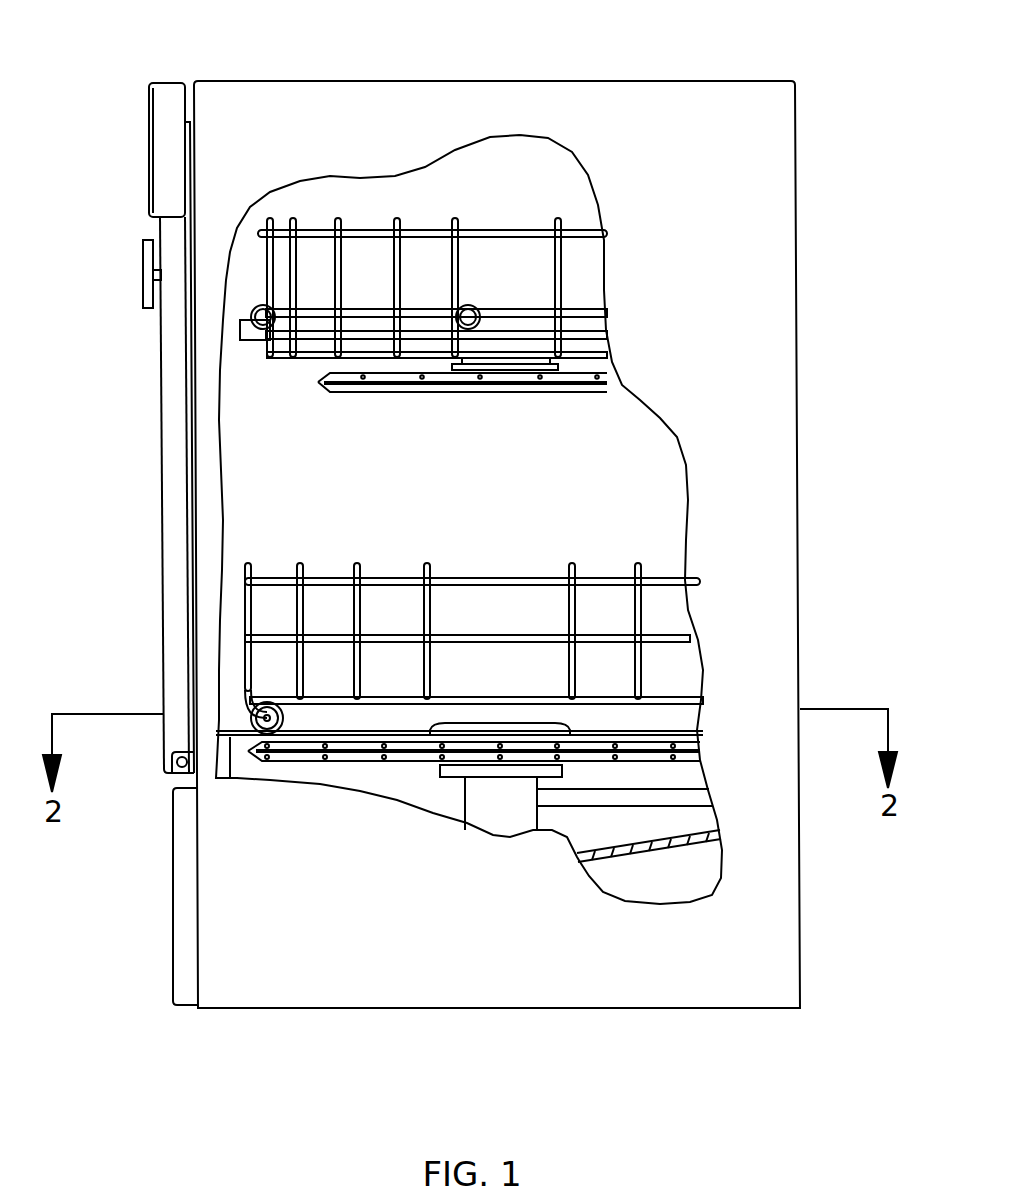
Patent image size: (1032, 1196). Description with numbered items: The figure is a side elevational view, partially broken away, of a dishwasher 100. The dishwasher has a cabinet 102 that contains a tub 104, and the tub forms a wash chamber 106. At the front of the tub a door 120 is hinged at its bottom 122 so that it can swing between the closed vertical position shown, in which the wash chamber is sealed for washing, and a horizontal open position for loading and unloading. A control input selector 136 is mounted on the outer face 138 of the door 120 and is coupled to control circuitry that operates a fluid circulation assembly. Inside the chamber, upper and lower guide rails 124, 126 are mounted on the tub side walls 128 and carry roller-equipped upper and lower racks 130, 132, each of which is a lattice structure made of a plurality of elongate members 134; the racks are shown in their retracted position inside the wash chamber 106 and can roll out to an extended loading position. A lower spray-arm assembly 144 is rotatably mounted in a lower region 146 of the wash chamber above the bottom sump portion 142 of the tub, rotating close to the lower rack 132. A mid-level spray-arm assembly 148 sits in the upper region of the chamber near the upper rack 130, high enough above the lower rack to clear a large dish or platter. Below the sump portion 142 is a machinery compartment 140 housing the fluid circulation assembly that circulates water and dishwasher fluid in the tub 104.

The dishwasher 100 is at (708, 64).
The cabinet 102 is at (782, 222).
The tub 104 is at (297, 495).
The wash chamber 106 is at (255, 534).
The door 120 is at (162, 732).
The bottom 122 is at (168, 776).
The upper guide rail 124 is at (246, 342).
The lower guide rail 126 is at (231, 762).
The tub side walls 128 is at (318, 190).
The upper rack 130 is at (429, 220).
The lower rack 132 is at (325, 570).
The elongate members 134 is at (306, 360).
The control input selector 136 is at (146, 310).
The outer face 138 is at (163, 393).
The machinery compartment 140 is at (675, 888).
The bottom sump portion 142 is at (672, 843).
The lower spray-arm assembly 144 is at (375, 772).
The lower region 146 is at (667, 716).
The mid-level spray-arm assembly 148 is at (428, 400).